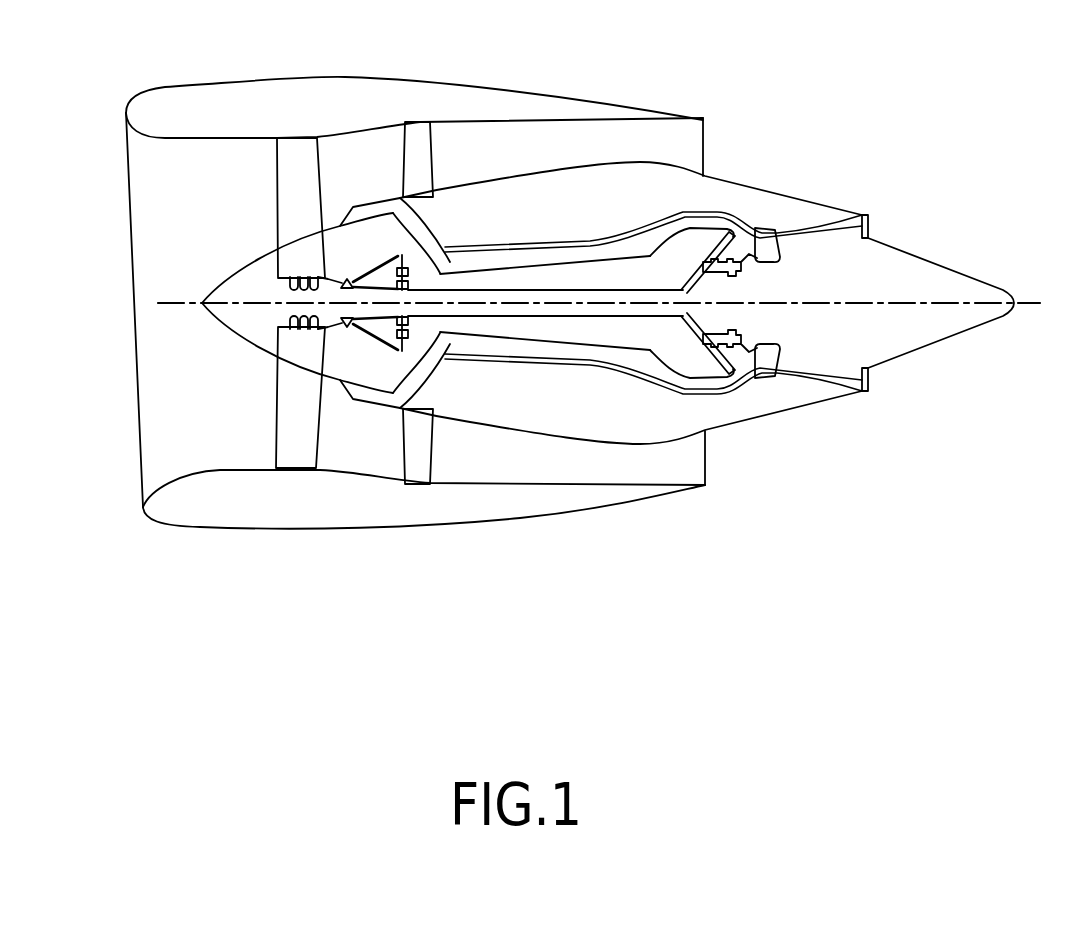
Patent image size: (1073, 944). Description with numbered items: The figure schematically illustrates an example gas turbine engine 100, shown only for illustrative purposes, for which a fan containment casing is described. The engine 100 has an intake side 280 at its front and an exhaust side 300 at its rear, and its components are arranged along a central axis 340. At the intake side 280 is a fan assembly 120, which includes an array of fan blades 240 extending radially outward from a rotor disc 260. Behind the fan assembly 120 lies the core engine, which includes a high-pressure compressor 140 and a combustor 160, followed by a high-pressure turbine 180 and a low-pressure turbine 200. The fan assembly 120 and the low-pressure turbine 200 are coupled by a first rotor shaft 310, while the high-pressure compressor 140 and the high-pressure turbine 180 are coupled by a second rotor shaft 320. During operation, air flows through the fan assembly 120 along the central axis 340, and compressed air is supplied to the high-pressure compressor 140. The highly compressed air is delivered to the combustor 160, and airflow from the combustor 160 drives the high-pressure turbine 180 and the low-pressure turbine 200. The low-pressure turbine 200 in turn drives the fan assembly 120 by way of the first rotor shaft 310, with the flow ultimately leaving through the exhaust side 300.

The gas turbine engine 100 is at (605, 55).
The fan assembly 120 is at (297, 413).
The high-pressure compressor 140 is at (450, 265).
The combustor 160 is at (603, 253).
The high-pressure turbine 180 is at (643, 360).
The low-pressure turbine 200 is at (718, 223).
The fan blades 240 is at (303, 198).
The rotor disc 260 is at (248, 326).
The intake side 280 is at (100, 160).
The exhaust side 300 is at (752, 150).
The first rotor shaft 310 is at (414, 372).
The second rotor shaft 320 is at (470, 350).
The central axis 340 is at (920, 300).